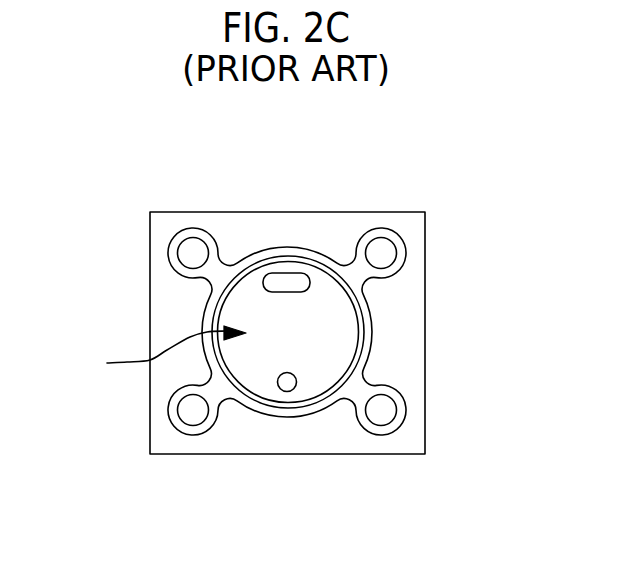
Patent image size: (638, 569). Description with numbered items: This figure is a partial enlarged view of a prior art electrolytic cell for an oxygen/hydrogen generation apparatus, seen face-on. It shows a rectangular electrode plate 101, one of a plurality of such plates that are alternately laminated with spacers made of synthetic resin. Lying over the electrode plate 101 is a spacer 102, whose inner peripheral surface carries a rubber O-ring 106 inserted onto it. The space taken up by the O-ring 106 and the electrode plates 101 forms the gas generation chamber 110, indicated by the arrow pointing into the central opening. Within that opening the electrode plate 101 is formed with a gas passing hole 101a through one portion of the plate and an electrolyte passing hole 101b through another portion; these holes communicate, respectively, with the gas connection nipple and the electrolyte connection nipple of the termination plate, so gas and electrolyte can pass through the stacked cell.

The electrode plate 101 is at (403, 325).
The gas passing hole 101a is at (287, 281).
The electrolyte passing hole 101b is at (290, 385).
The spacer 102 is at (367, 382).
The O-ring 106 is at (312, 262).
The gas generation chamber 110 is at (157, 352).